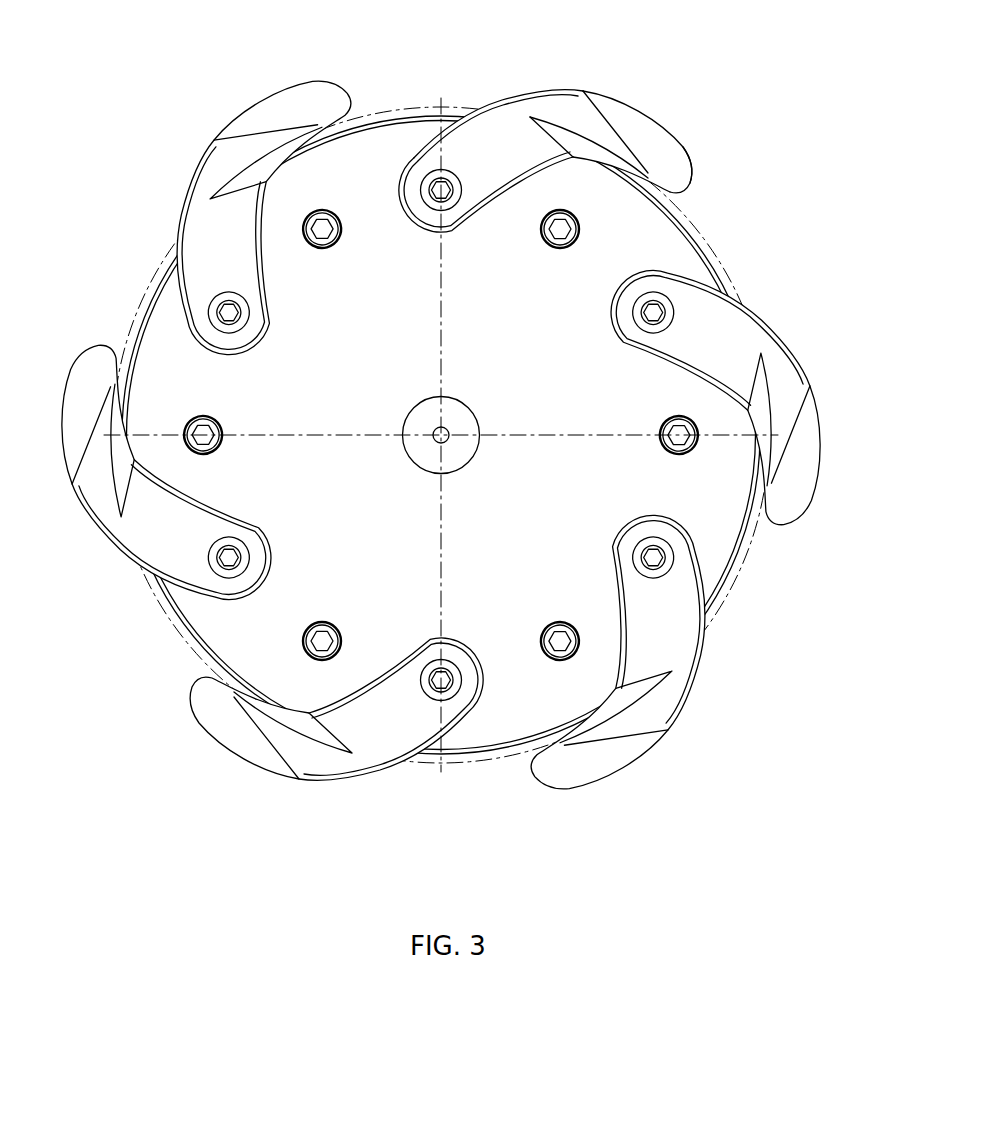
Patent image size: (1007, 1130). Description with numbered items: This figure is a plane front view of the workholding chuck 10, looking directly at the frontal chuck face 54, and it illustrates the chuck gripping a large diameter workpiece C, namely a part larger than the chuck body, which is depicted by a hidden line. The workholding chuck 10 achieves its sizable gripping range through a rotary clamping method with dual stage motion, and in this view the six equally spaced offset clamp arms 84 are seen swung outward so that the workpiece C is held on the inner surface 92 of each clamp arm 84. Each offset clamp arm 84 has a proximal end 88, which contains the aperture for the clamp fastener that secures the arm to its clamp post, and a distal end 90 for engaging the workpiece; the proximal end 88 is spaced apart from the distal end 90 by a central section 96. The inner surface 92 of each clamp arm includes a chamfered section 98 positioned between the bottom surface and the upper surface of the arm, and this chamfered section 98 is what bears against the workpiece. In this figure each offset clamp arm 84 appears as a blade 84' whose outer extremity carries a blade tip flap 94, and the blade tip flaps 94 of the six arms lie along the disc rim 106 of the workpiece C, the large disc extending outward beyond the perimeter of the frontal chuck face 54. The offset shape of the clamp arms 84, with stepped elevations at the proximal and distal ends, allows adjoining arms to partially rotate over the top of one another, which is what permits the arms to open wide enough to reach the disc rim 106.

The workholding chuck 10 is at (441, 435).
The frontal chuck face 54 is at (720, 558).
The offset clamp arm 84 is at (388, 420).
The blade 84' is at (493, 450).
The proximal end 88 is at (427, 150).
The distal end 90 is at (673, 172).
The inner surface 92 is at (648, 173).
The blade tip flap 94 is at (660, 122).
The central section 96 is at (570, 86).
The chamfered section 98 is at (580, 143).
The workpiece C is at (722, 242).
The disc rim 106 is at (722, 273).